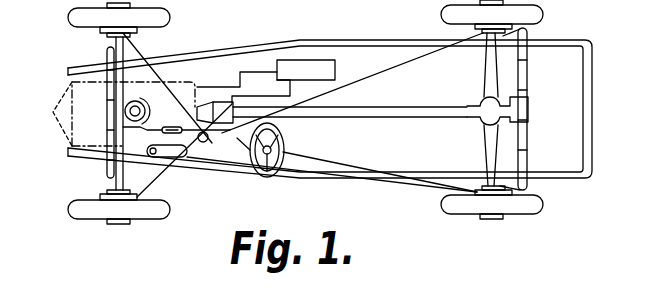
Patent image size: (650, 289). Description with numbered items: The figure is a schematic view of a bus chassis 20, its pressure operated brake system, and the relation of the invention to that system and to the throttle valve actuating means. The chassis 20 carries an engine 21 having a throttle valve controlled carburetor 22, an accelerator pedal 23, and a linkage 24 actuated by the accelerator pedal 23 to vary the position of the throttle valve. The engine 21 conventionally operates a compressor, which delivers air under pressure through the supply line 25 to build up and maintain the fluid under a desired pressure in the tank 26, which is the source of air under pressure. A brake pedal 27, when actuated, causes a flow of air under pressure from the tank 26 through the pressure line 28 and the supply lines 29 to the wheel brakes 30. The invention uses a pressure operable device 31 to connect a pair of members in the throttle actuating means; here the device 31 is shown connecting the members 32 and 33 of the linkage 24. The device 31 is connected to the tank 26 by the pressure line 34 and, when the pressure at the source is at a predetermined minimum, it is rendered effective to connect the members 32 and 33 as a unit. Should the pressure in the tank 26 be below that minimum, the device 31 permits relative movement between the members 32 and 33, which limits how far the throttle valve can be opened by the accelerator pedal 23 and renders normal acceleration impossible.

The chassis 20 is at (393, 180).
The engine 21 is at (133, 114).
The throttle valve controlled carburetor 22 is at (137, 115).
The accelerator pedal 23 is at (236, 112).
The linkage 24 is at (138, 135).
The supply line 25 is at (241, 72).
The tank 26 is at (313, 62).
The brake pedal 27 is at (237, 140).
The pressure line 28 is at (252, 96).
The supply lines 29 is at (145, 57).
The wheel brakes 30 is at (100, 30).
The pressure operable device 31 is at (173, 127).
The member 32 is at (173, 163).
The member 33 is at (150, 114).
The pressure line 34 is at (176, 128).